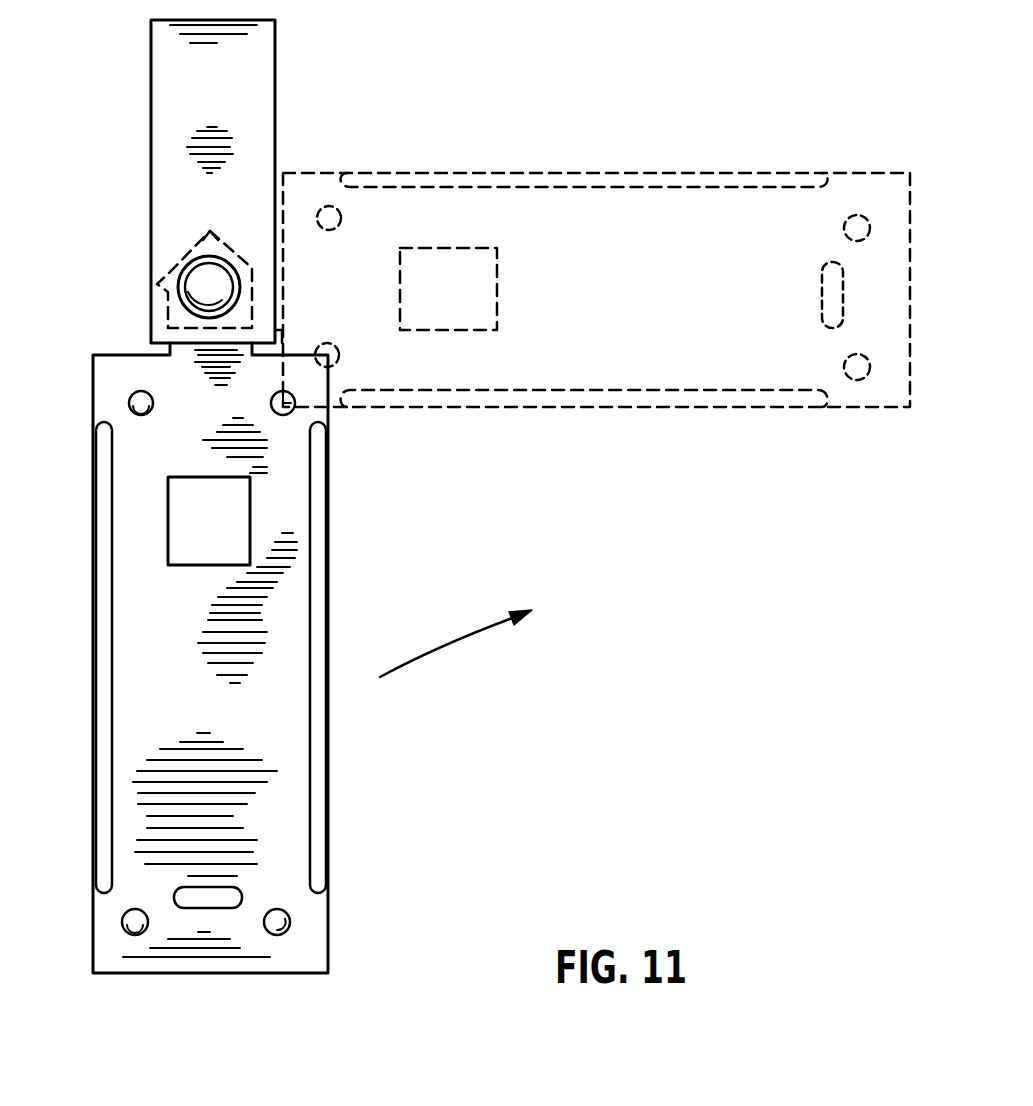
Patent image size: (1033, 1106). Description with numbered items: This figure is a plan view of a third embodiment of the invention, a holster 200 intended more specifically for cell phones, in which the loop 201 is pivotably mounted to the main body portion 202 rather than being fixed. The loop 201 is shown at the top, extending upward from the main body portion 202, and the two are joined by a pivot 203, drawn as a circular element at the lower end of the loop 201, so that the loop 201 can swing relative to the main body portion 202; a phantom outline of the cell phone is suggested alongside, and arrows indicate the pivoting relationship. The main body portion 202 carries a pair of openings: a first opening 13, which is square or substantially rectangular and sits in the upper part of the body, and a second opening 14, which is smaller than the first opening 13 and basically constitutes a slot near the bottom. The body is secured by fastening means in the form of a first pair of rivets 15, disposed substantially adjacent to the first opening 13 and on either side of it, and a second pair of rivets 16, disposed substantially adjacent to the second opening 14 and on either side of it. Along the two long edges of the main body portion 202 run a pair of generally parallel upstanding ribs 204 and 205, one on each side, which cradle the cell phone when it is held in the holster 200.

The first opening 13 is at (246, 503).
The second opening 14 is at (218, 896).
The first pair of rivets 15 is at (271, 403).
The second pair of rivets 16 is at (135, 936).
The holster 200 is at (463, 534).
The loop 201 is at (232, 181).
The main body portion 202 is at (242, 661).
The pivot 203 is at (190, 278).
The upstanding rib 204 is at (98, 780).
The upstanding rib 205 is at (320, 720).